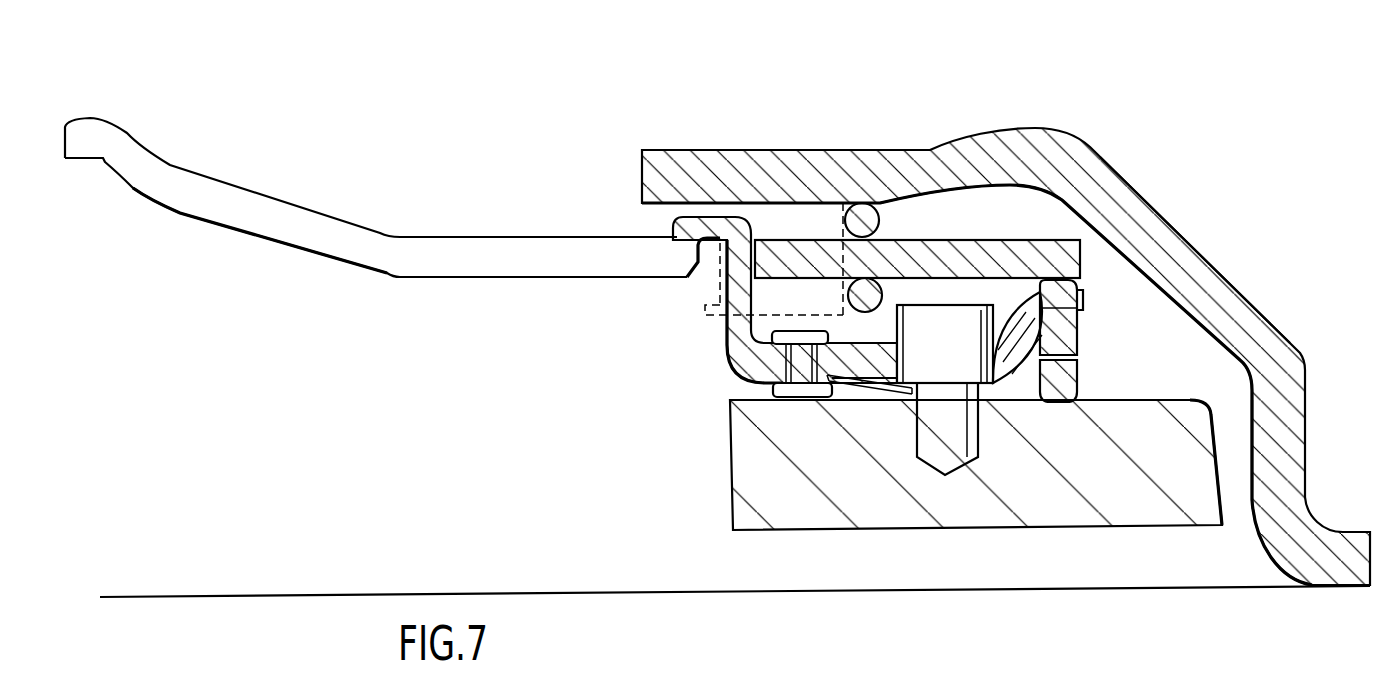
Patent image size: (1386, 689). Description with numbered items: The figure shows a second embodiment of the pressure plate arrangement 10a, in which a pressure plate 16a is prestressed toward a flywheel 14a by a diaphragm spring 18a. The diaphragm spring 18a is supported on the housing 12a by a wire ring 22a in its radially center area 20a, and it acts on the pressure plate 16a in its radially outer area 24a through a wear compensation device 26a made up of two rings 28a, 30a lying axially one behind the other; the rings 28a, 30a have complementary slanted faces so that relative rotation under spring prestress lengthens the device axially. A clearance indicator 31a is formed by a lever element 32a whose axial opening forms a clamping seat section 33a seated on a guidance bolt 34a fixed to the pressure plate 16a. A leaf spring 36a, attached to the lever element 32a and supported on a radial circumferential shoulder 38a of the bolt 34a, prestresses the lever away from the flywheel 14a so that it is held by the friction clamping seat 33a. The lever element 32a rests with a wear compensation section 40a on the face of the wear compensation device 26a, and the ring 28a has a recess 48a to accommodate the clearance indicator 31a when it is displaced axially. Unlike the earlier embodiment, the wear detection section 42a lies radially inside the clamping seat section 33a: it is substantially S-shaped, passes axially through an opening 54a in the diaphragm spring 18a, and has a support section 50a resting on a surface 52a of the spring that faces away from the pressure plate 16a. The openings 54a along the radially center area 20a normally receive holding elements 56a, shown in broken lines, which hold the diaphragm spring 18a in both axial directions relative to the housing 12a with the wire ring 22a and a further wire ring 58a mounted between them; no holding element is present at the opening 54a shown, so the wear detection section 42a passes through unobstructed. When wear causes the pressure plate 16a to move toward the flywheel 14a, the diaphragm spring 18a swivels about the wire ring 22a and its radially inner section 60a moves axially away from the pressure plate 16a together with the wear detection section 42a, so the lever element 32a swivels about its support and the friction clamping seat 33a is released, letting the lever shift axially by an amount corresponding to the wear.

The pressure plate arrangement 10a is at (1072, 93).
The housing 12a is at (957, 135).
The flywheel 14a is at (1147, 593).
The pressure plate 16a is at (1125, 525).
The diaphragm spring 18a is at (300, 207).
The radially center area 20a is at (758, 220).
The wire ring 22a is at (883, 203).
The radially outer area 24a is at (1085, 188).
The wear compensation device 26a is at (1130, 350).
The ring 28a is at (1082, 330).
The ring 30a is at (1079, 383).
The clearance indicator 31a is at (630, 340).
The lever element 32a is at (733, 373).
The friction clamping seat 33a is at (917, 400).
The guidance bolt 34a is at (997, 387).
The leaf spring 36a is at (868, 387).
The radial circumferential shoulder 38a is at (977, 387).
The wear compensation section 40a is at (1037, 287).
The wear detection section 42a is at (707, 307).
The recess 48a is at (1083, 282).
The support section 50a is at (677, 227).
The surface 52a is at (527, 237).
The opening 54a is at (800, 238).
The holding element 56a is at (845, 256).
The wire ring 58a is at (882, 290).
The radially inner section 60a is at (493, 278).